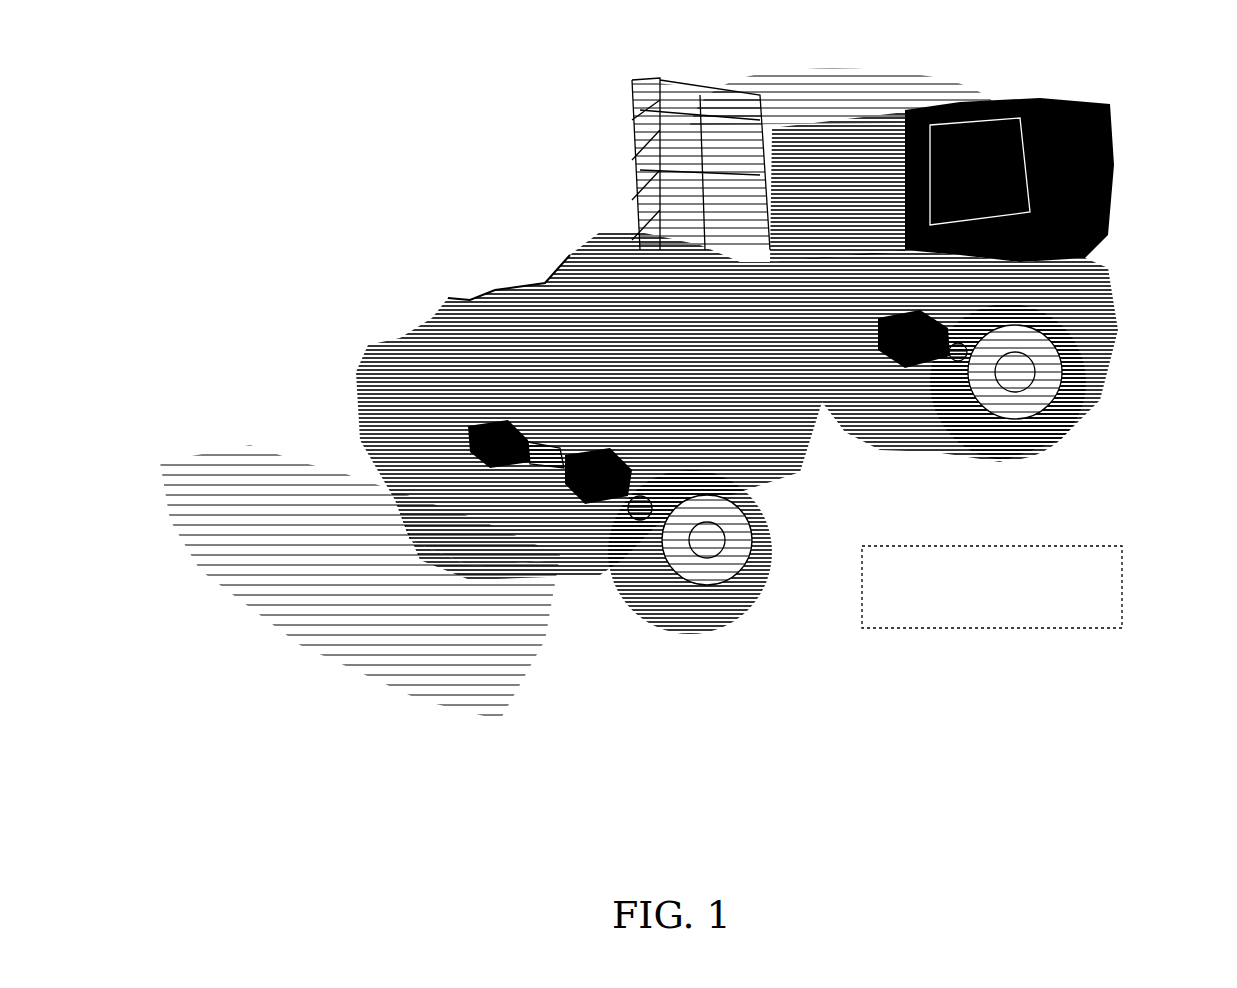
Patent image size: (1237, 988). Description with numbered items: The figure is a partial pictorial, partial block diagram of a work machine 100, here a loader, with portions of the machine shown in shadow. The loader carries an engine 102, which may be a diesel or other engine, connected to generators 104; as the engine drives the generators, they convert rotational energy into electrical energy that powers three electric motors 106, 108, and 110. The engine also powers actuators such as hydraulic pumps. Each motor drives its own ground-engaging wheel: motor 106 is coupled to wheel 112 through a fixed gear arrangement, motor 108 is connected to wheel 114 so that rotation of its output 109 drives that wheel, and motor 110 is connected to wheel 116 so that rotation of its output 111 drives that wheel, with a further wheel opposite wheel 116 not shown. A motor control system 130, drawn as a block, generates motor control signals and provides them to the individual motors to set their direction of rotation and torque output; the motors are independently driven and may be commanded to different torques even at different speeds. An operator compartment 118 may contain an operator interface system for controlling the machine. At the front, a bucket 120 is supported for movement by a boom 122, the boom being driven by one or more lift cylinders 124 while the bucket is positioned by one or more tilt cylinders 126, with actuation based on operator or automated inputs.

The work machine 100 is at (444, 152).
The engine 102 is at (1110, 212).
The generators 104 is at (848, 130).
The electric motor 106 is at (470, 444).
The electric motor 108 is at (605, 500).
The output of motor 108 109 is at (642, 516).
The electric motor 110 is at (925, 352).
The output of motor 110 111 is at (958, 355).
The wheel 112 is at (378, 366).
The wheel 114 is at (715, 606).
The wheel 116 is at (1010, 435).
The operator compartment 118 is at (715, 78).
The bucket 120 is at (140, 456).
The boom 122 is at (505, 572).
The lift cylinder 124 is at (466, 302).
The tilt cylinder 126 is at (405, 532).
The motor control system 130 is at (830, 355).